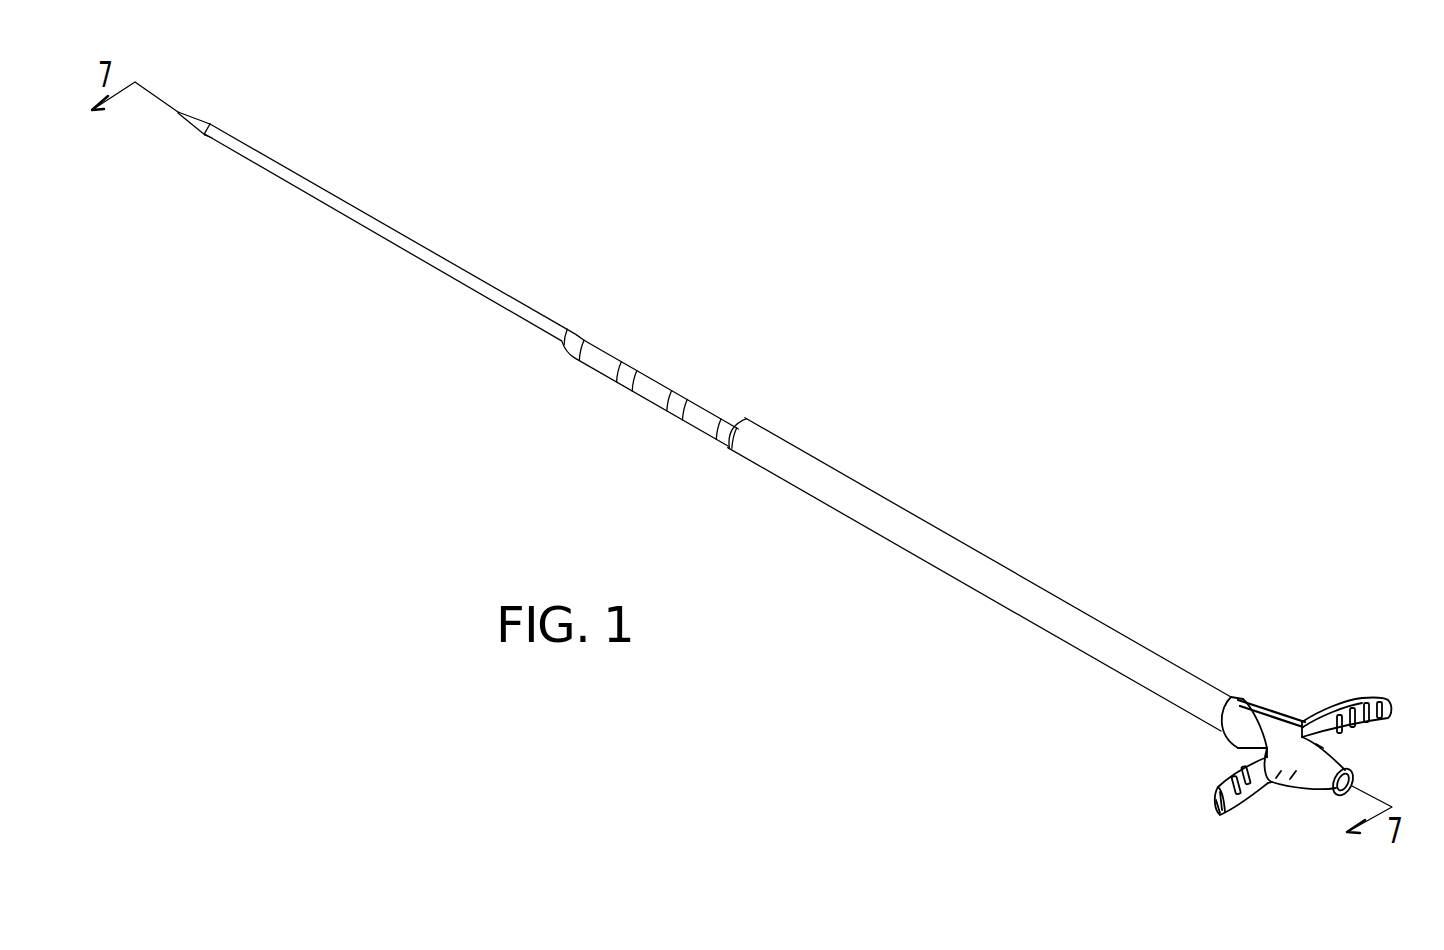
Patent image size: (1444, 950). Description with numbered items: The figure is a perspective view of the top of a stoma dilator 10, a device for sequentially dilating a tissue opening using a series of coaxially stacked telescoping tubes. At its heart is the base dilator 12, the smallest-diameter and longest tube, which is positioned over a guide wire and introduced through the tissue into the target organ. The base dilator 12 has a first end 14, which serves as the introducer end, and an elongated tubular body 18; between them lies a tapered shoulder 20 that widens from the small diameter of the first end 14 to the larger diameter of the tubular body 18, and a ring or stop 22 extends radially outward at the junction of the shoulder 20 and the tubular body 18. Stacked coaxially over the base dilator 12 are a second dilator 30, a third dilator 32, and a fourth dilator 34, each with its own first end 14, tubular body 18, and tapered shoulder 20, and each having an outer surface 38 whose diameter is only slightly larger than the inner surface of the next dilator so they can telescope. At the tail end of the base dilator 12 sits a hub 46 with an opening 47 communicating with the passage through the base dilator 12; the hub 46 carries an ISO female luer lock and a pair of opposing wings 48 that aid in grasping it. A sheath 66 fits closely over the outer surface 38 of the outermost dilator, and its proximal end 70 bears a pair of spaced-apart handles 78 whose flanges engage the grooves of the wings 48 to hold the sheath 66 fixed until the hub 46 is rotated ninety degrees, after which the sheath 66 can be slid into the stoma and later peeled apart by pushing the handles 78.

The stoma dilator 10 is at (868, 206).
The base dilator 12 is at (322, 190).
The first end 14 is at (182, 105).
The elongated tubular body 18 is at (410, 238).
The tapered shoulder 20 is at (198, 117).
The ring or stop 22 is at (205, 133).
The second dilator 30 is at (615, 350).
The third dilator 32 is at (670, 378).
The fourth dilator 34 is at (723, 407).
The outer surface 38 is at (695, 432).
The sheath 66 is at (1162, 665).
The proximal end 70 is at (1273, 697).
The handles 78 is at (1361, 697).
The hub 46 is at (1295, 767).
The opening 47 is at (1354, 778).
The wings 48 is at (1320, 747).